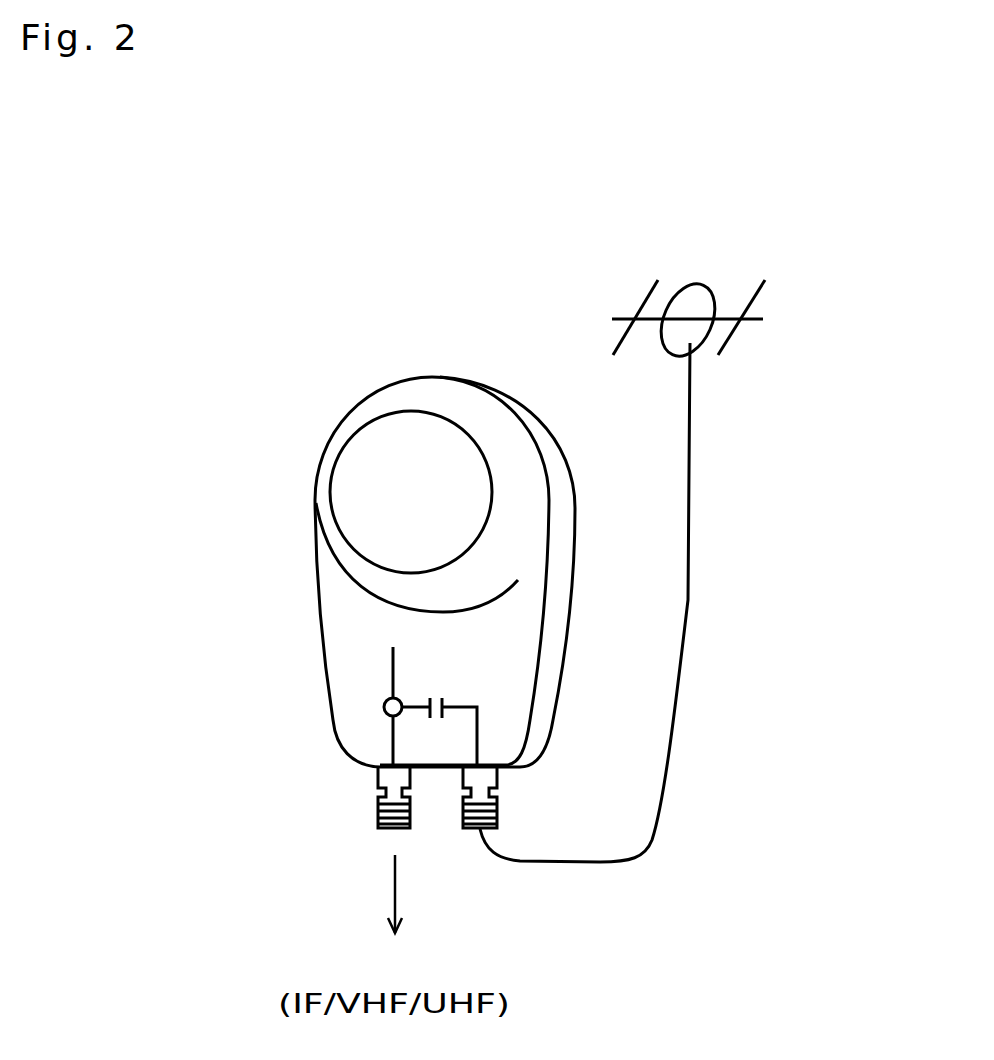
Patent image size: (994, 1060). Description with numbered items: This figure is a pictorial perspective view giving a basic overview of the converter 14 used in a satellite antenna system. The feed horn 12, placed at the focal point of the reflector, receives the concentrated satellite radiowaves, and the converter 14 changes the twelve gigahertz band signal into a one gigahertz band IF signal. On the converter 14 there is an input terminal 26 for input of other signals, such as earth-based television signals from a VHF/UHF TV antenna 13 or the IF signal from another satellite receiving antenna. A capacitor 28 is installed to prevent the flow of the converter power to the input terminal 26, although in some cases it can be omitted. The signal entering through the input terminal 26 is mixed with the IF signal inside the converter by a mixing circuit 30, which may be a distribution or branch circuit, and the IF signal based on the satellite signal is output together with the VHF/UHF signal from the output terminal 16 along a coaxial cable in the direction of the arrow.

The feed horn 12 is at (393, 493).
The VHF/UHF TV antenna 13 is at (767, 285).
The converter 14 is at (438, 376).
The output terminal 16 is at (373, 825).
The input terminal 26 is at (473, 835).
The capacitor 28 is at (448, 680).
The mixing circuit 30 is at (383, 727).